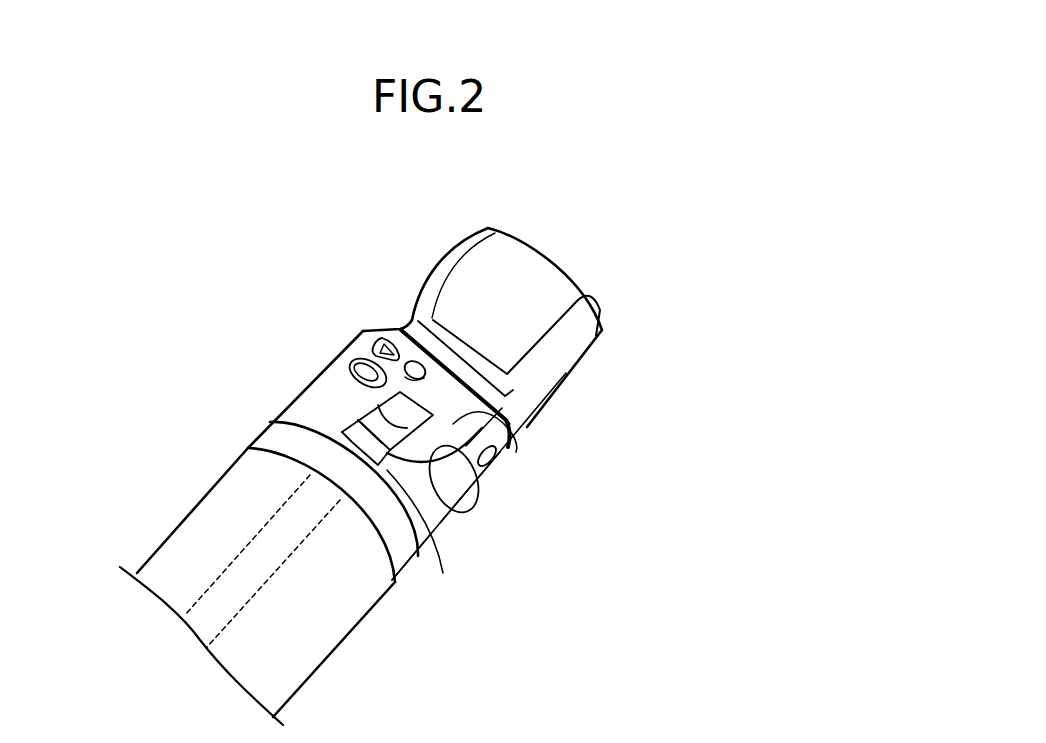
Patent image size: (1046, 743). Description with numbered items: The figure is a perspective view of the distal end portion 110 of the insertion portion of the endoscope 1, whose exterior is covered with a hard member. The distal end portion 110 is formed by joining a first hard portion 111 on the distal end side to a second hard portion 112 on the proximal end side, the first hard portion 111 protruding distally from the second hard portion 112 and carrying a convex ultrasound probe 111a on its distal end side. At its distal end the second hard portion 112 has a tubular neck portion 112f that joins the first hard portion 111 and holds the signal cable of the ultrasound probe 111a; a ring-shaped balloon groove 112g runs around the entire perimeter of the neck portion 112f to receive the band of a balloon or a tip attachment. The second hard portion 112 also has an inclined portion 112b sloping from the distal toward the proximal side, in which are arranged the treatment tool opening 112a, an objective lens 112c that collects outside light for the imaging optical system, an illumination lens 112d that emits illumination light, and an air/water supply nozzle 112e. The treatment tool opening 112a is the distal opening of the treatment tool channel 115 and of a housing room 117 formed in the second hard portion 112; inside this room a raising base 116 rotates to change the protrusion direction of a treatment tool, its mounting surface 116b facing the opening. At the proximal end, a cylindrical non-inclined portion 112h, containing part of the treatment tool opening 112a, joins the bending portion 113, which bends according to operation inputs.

The endoscope 1 is at (655, 212).
The distal end portion 110 is at (643, 495).
The first hard portion 111 is at (582, 362).
The ultrasound probe 111a is at (535, 270).
The second hard portion 112 is at (480, 491).
The treatment tool opening 112a is at (463, 493).
The inclined portion 112b is at (520, 443).
The objective lens 112c is at (360, 373).
The illumination lens 112d is at (387, 350).
The air/water supply nozzle 112e is at (417, 363).
The neck portion 112f is at (513, 390).
The balloon groove 112g is at (508, 410).
The non-inclined portion 112h is at (443, 573).
The bending portion 113 is at (334, 647).
The treatment tool channel 115 is at (235, 567).
The raising base 116 is at (337, 433).
The mounting surface 116b is at (357, 407).
The housing room 117 is at (357, 433).